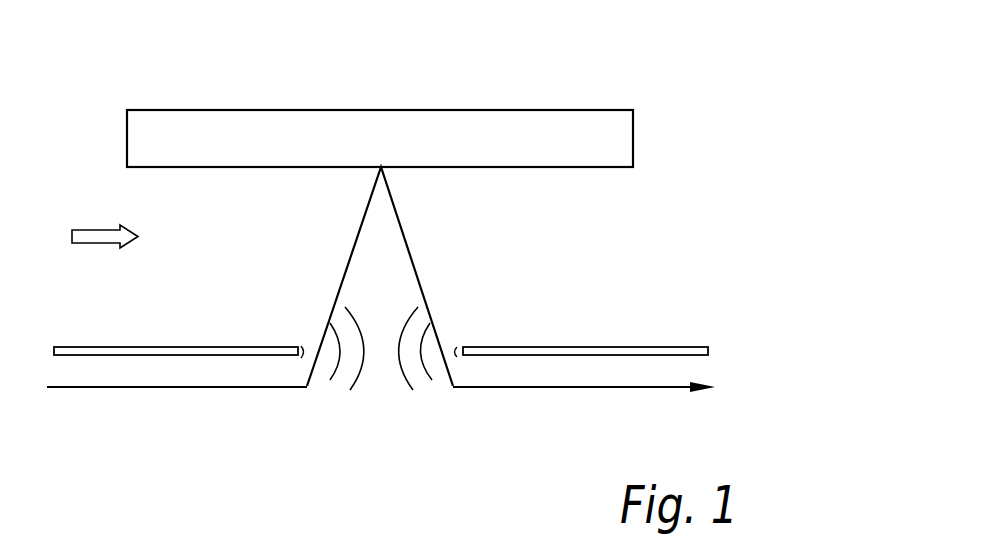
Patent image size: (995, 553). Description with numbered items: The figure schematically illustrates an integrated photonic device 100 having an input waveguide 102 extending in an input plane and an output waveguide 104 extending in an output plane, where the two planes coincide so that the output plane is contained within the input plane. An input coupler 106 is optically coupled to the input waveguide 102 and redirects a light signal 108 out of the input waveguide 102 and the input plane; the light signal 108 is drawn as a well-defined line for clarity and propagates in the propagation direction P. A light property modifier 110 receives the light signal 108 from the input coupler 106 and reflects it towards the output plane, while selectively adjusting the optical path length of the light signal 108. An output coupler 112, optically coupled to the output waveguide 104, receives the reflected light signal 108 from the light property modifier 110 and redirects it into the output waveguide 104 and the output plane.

The integrated photonic device 100 is at (396, 243).
The input waveguide 102 is at (192, 348).
The output waveguide 104 is at (583, 347).
The input coupler 106 is at (340, 362).
The light signal 108 is at (345, 268).
The light property modifier 110 is at (576, 82).
The output coupler 112 is at (427, 363).